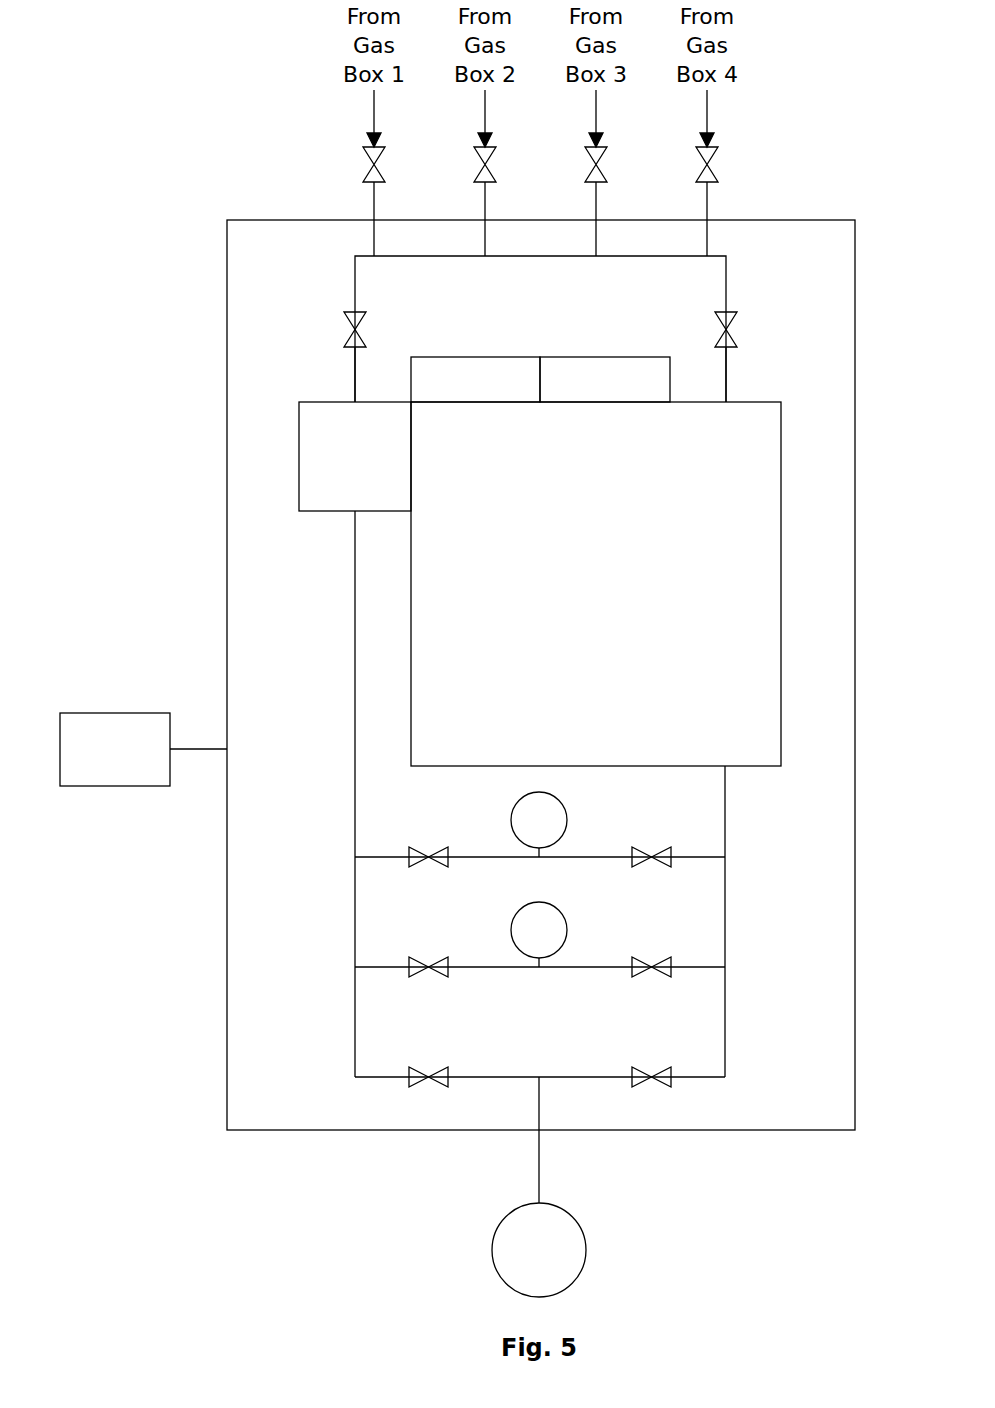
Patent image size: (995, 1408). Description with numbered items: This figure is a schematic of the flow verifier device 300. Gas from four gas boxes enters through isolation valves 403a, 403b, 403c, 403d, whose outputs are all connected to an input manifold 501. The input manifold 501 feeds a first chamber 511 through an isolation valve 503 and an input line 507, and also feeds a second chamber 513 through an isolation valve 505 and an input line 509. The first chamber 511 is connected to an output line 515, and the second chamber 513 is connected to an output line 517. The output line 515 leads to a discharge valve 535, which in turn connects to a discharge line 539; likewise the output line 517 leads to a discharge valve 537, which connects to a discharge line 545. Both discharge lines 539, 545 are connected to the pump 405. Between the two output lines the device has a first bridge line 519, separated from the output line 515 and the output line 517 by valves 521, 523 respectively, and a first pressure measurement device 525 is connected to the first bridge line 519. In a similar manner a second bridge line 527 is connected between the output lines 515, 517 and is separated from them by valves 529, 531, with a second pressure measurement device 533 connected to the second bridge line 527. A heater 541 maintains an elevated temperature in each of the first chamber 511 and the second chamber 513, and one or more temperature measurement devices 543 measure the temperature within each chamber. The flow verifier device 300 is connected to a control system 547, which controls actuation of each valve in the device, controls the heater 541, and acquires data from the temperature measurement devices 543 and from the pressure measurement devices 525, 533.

The flow verifier device 300 is at (782, 220).
The isolation valve 403a is at (366, 176).
The isolation valve 403b is at (477, 176).
The isolation valve 403c is at (588, 176).
The isolation valve 403d is at (699, 176).
The pump 405 is at (557, 1223).
The input manifold 501 is at (541, 257).
The isolation valve 503 is at (348, 341).
The isolation valve 505 is at (718, 341).
The input line 507 is at (354, 385).
The input line 509 is at (727, 383).
The first chamber 511 is at (376, 469).
The second chamber 513 is at (616, 596).
The output line 515 is at (354, 567).
The output line 517 is at (727, 802).
The first bridge line 519 is at (578, 856).
The valve 521 is at (421, 858).
The valve 523 is at (644, 858).
The first pressure measurement device 525 is at (525, 829).
The second bridge line 527 is at (578, 966).
The valve 529 is at (421, 968).
The valve 531 is at (644, 968).
The second pressure measurement device 533 is at (525, 939).
The discharge valve 535 is at (421, 1078).
The discharge valve 537 is at (644, 1078).
The discharge line 539 is at (500, 1076).
The heater 541 is at (496, 392).
The temperature measurement device 543 is at (625, 392).
The discharge line 545 is at (578, 1076).
The control system 547 is at (94, 761).